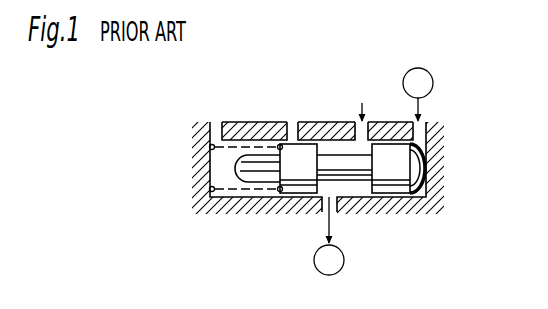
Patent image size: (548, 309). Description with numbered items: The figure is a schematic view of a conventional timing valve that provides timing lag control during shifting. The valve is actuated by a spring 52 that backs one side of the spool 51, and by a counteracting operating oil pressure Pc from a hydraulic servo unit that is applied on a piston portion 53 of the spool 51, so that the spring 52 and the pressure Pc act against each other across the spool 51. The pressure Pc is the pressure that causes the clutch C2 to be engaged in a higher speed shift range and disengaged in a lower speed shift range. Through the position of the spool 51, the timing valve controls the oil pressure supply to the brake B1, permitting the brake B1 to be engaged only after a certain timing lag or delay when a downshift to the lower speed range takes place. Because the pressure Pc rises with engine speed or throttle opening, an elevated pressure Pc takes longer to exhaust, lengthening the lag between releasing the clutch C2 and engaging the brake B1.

The spool 51 is at (356, 168).
The spring 52 is at (243, 189).
The piston portion 53 is at (400, 172).
The clutch C2 is at (433, 84).
The operating oil pressure Pc is at (422, 107).
The brake B1 is at (344, 262).